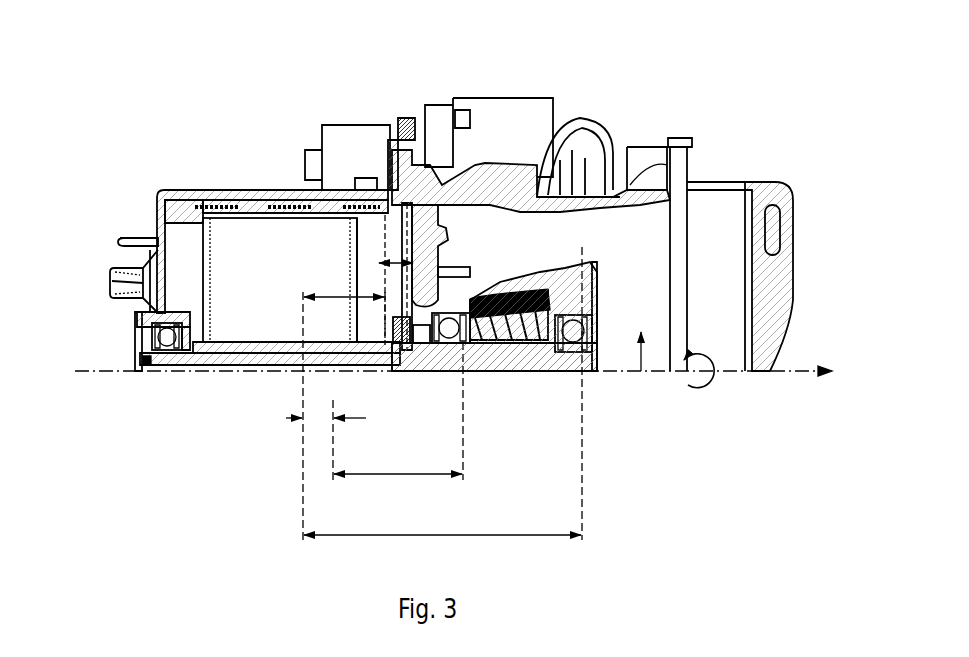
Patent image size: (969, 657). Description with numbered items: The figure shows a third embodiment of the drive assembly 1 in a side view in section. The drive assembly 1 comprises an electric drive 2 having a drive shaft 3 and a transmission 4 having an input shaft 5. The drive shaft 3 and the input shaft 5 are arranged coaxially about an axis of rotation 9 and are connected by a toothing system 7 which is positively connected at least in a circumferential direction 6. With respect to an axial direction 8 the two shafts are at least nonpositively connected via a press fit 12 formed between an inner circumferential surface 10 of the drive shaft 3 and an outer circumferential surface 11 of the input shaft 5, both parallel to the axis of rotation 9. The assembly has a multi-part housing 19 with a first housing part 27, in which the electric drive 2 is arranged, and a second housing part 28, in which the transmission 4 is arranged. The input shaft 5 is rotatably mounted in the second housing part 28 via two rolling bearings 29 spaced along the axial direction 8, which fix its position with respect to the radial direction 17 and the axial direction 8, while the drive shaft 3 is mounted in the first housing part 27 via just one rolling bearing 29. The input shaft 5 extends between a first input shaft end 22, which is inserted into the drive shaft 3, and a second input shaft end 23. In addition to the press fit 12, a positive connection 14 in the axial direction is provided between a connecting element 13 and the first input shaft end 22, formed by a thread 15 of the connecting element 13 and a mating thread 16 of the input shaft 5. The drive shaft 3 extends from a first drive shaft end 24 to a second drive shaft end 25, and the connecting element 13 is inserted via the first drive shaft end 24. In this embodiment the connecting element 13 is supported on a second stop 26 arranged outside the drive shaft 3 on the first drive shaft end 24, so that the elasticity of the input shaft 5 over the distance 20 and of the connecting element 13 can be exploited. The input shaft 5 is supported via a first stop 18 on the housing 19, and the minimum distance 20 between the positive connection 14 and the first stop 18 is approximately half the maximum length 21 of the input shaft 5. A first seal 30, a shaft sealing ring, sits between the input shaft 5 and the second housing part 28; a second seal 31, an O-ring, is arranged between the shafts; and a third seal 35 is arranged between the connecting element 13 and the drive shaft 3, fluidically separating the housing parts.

The drive assembly 1 is at (665, 93).
The electric drive 2 is at (258, 210).
The drive shaft 3 is at (240, 347).
The transmission 4 is at (708, 227).
The input shaft 5 is at (502, 353).
The circumferential direction 6 is at (701, 358).
The toothing system 7 is at (344, 403).
The axial direction 8 is at (459, 387).
The axis of rotation 9 is at (735, 374).
The inner circumferential surface 10 is at (365, 358).
The outer circumferential surface 11 is at (352, 350).
The press fit 12 is at (388, 258).
The connecting element 13 is at (207, 365).
The positive connection 14 is at (320, 425).
The thread 15 is at (302, 347).
The mating thread 16 is at (330, 372).
The radial direction 17 is at (658, 336).
The first stop 18 is at (455, 347).
The housing 19 is at (295, 205).
The minimum distance 20 is at (398, 424).
The maximum length 21 is at (443, 409).
The first input shaft end 22 is at (275, 300).
The second input shaft end 23 is at (590, 363).
The first drive shaft end 24 is at (137, 320).
The second drive shaft end 25 is at (418, 360).
The second stop 26 is at (140, 365).
The first housing part 27 is at (215, 188).
The second housing part 28 is at (483, 193).
The rolling bearing 29 is at (152, 330).
The first seal 30 is at (432, 342).
The second seal 31 is at (406, 358).
The third seal 35 is at (150, 367).